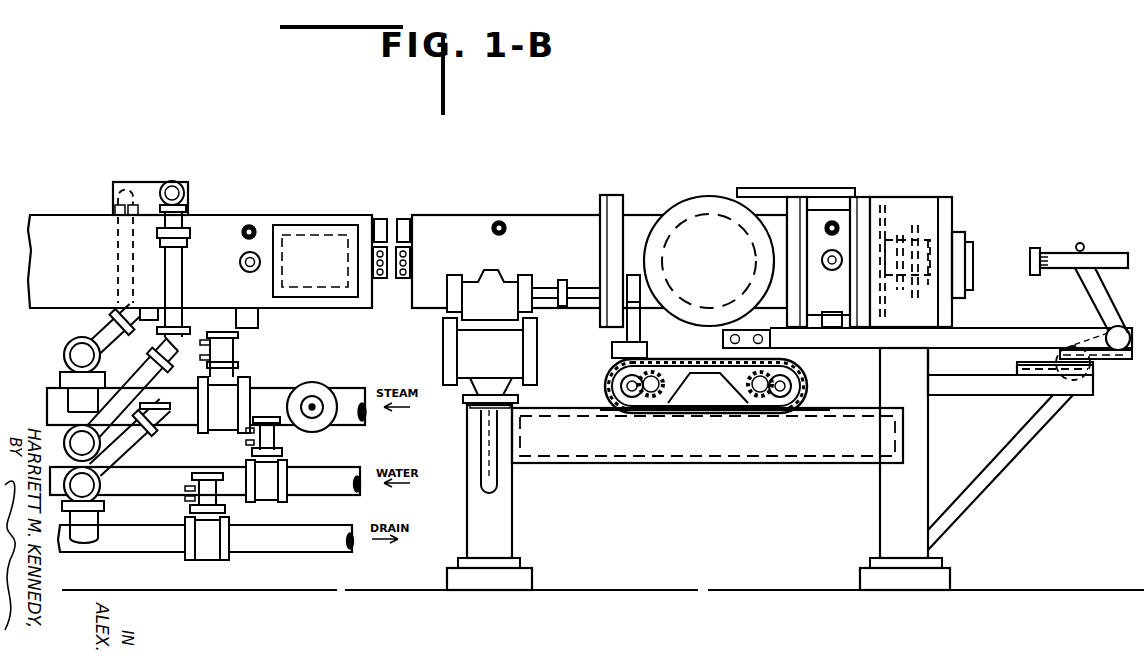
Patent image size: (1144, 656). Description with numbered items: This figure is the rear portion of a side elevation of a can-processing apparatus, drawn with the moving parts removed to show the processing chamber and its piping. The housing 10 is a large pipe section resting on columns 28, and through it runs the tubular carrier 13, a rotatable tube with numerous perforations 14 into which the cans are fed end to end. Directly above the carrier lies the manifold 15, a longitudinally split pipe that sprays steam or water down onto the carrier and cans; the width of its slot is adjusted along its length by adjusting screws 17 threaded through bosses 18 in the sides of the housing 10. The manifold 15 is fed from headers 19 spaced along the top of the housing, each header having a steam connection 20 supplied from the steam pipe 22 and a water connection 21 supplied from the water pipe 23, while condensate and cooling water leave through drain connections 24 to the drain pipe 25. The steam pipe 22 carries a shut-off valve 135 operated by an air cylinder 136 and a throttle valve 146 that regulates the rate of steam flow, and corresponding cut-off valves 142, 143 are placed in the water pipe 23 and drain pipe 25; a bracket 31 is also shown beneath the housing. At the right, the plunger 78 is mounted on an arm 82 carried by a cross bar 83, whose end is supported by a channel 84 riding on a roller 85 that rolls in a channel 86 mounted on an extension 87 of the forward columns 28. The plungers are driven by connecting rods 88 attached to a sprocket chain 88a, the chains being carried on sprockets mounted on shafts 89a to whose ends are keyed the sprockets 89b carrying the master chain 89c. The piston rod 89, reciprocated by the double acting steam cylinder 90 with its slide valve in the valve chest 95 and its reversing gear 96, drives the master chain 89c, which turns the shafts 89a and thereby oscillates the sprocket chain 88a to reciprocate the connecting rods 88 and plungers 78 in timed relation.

The housing 10 is at (448, 226).
The tubular carrier 13 is at (383, 280).
The perforations 14 is at (400, 280).
The manifold 15 is at (381, 218).
The adjusting screws 17 is at (252, 235).
The bosses 18 is at (246, 228).
The headers 19 is at (148, 190).
The steam connection 20 is at (130, 180).
The water connection 21 is at (182, 186).
The steam pipe 22 is at (280, 389).
The water pipe 23 is at (305, 480).
The drain connections 24 is at (128, 445).
The drain pipe 25 is at (308, 535).
The columns 28 is at (503, 534).
The bracket 31 is at (260, 328).
The plunger 78 is at (1050, 252).
The arm 82 is at (1088, 293).
The cross bar 83 is at (1120, 328).
The channel 84 is at (1116, 360).
The roller 85 is at (1080, 382).
The channel 86 is at (1014, 370).
The extension 87 is at (992, 388).
The connecting rods 88 is at (840, 346).
The sprocket chain 88a is at (678, 363).
The piston rod 89 is at (693, 376).
The shafts 89a is at (631, 392).
The sprockets 89b is at (650, 392).
The master chain 89c is at (665, 360).
The double acting steam cylinder 90 is at (490, 363).
The valve chest 95 is at (493, 265).
The reversing gear 96 is at (633, 282).
The shut-off valve 135 is at (225, 398).
The air cylinder 136 is at (222, 350).
The cut-off valve 142 is at (258, 478).
The cut-off valve 143 is at (210, 548).
The throttle valve 146 is at (332, 400).